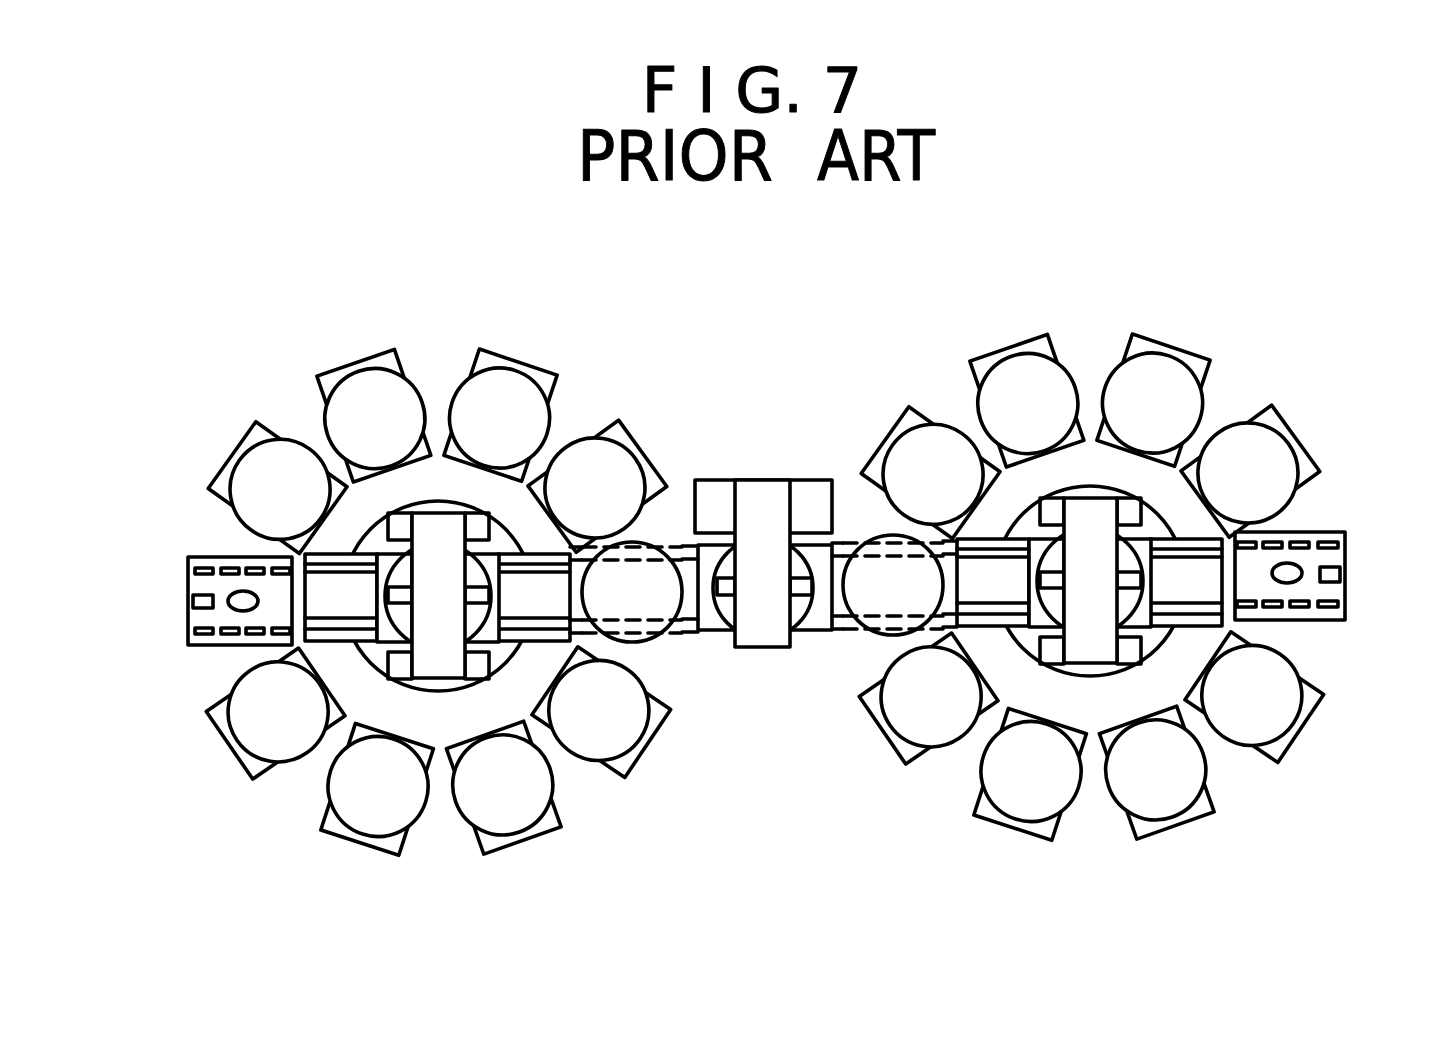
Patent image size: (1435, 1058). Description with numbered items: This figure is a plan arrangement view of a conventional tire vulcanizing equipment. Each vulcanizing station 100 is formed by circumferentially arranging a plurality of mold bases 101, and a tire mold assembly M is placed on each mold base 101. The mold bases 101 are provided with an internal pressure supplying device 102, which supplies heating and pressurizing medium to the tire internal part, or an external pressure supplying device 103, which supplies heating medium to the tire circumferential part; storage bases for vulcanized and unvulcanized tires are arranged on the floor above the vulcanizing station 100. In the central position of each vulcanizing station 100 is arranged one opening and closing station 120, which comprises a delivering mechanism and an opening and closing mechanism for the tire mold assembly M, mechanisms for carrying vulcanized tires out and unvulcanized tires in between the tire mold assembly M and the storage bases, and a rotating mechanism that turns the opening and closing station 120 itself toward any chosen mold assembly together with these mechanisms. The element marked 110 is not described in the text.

The vulcanizing station 100 is at (767, 573).
The mold base 101 is at (767, 585).
The internal pressure supplying device 102 is at (243, 591).
The external pressure supplying device 103 is at (193, 601).
The conveyor unit 110 is at (763, 590).
The opening and closing station 120 is at (437, 486).
The tire mold assembly M is at (330, 378).